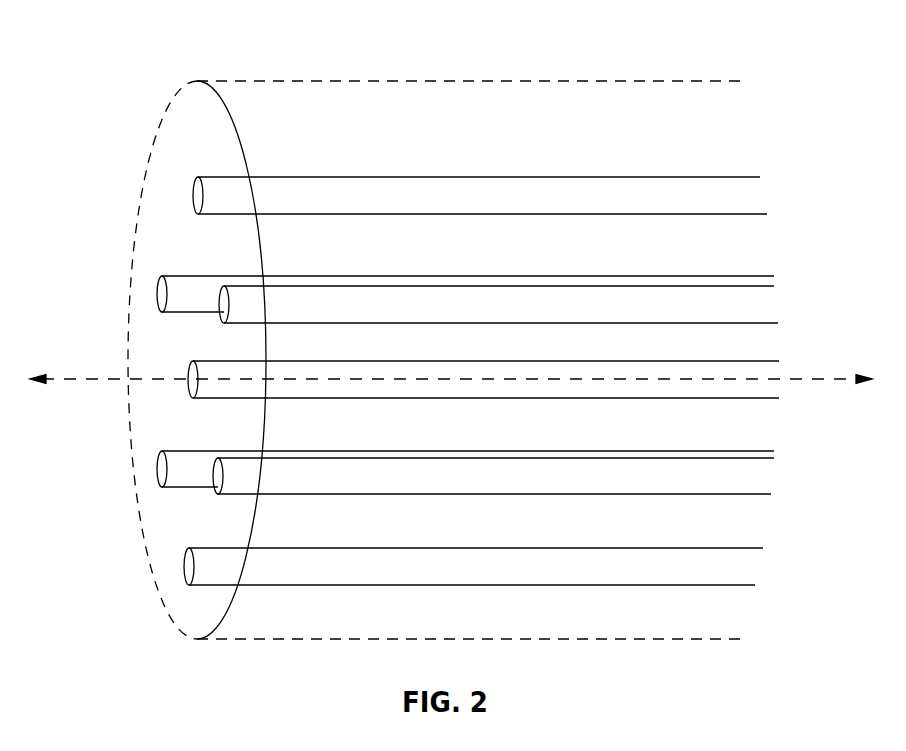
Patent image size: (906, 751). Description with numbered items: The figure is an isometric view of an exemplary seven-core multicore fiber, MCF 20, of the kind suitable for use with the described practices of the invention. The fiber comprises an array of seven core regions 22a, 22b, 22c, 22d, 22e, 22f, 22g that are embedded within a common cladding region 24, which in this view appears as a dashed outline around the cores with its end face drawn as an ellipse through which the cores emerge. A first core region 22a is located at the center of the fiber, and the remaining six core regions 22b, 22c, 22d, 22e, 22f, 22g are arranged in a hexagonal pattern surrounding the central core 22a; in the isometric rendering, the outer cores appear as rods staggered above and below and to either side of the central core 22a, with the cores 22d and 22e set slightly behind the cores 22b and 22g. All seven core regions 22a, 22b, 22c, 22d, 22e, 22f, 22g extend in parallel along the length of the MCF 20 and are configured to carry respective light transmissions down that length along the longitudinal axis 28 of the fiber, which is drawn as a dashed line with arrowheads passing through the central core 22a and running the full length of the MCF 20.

The multicore fiber 20 is at (250, 70).
The common cladding region 24 is at (214, 143).
The longitudinal axis 28 is at (83, 370).
The first core region 22a is at (188, 375).
The core region 22b is at (211, 305).
The core region 22c is at (246, 206).
The core region 22d is at (308, 313).
The core region 22e is at (306, 486).
The core region 22f is at (287, 575).
The core region 22g is at (210, 480).